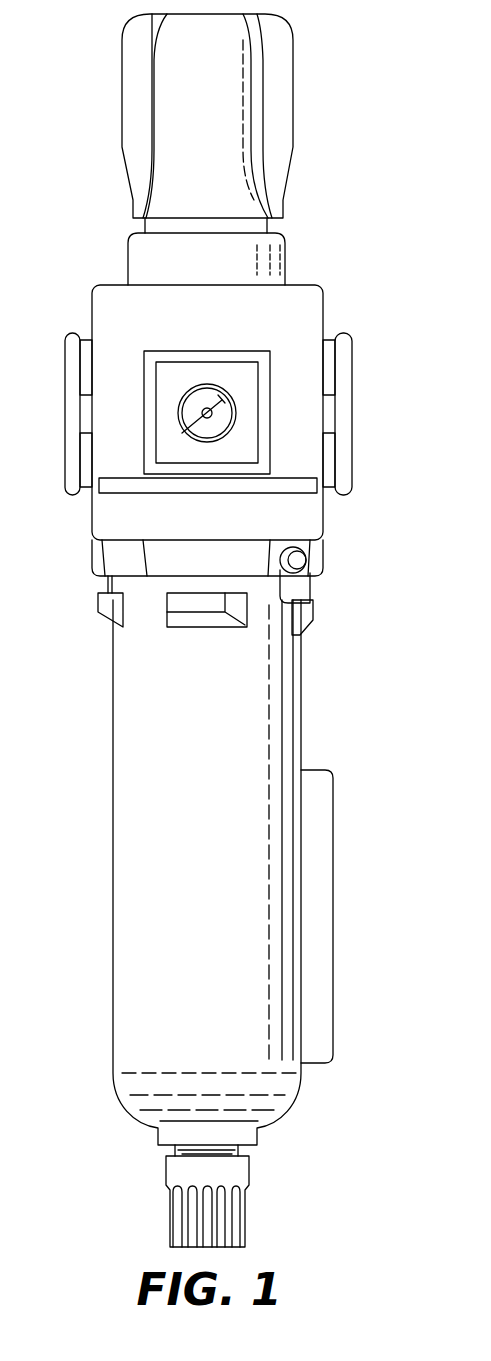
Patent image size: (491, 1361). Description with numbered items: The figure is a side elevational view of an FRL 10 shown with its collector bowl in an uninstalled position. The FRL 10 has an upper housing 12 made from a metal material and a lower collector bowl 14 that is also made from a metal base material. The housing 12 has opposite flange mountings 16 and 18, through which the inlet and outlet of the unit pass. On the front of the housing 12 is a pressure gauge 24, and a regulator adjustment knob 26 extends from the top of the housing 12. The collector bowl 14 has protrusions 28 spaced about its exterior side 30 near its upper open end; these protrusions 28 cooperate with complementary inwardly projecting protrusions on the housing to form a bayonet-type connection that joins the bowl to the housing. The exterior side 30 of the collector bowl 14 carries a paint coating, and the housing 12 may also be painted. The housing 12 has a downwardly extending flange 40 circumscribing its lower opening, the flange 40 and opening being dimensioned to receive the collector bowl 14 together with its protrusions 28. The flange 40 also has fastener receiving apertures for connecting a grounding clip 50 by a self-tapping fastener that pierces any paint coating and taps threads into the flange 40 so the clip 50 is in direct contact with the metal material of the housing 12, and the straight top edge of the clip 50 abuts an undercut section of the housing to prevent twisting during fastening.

The FRL 10 is at (303, 279).
The upper housing 12 is at (300, 315).
The lower collector bowl 14 is at (285, 673).
The flange mounting 16 is at (72, 345).
The flange mounting 18 is at (352, 357).
The pressure gauge 24 is at (188, 407).
The regulator adjustment knob 26 is at (275, 93).
The protrusions 28 is at (105, 612).
The exterior side 30 is at (132, 805).
The downwardly extending flange 40 is at (177, 562).
The grounding clip 50 is at (288, 600).